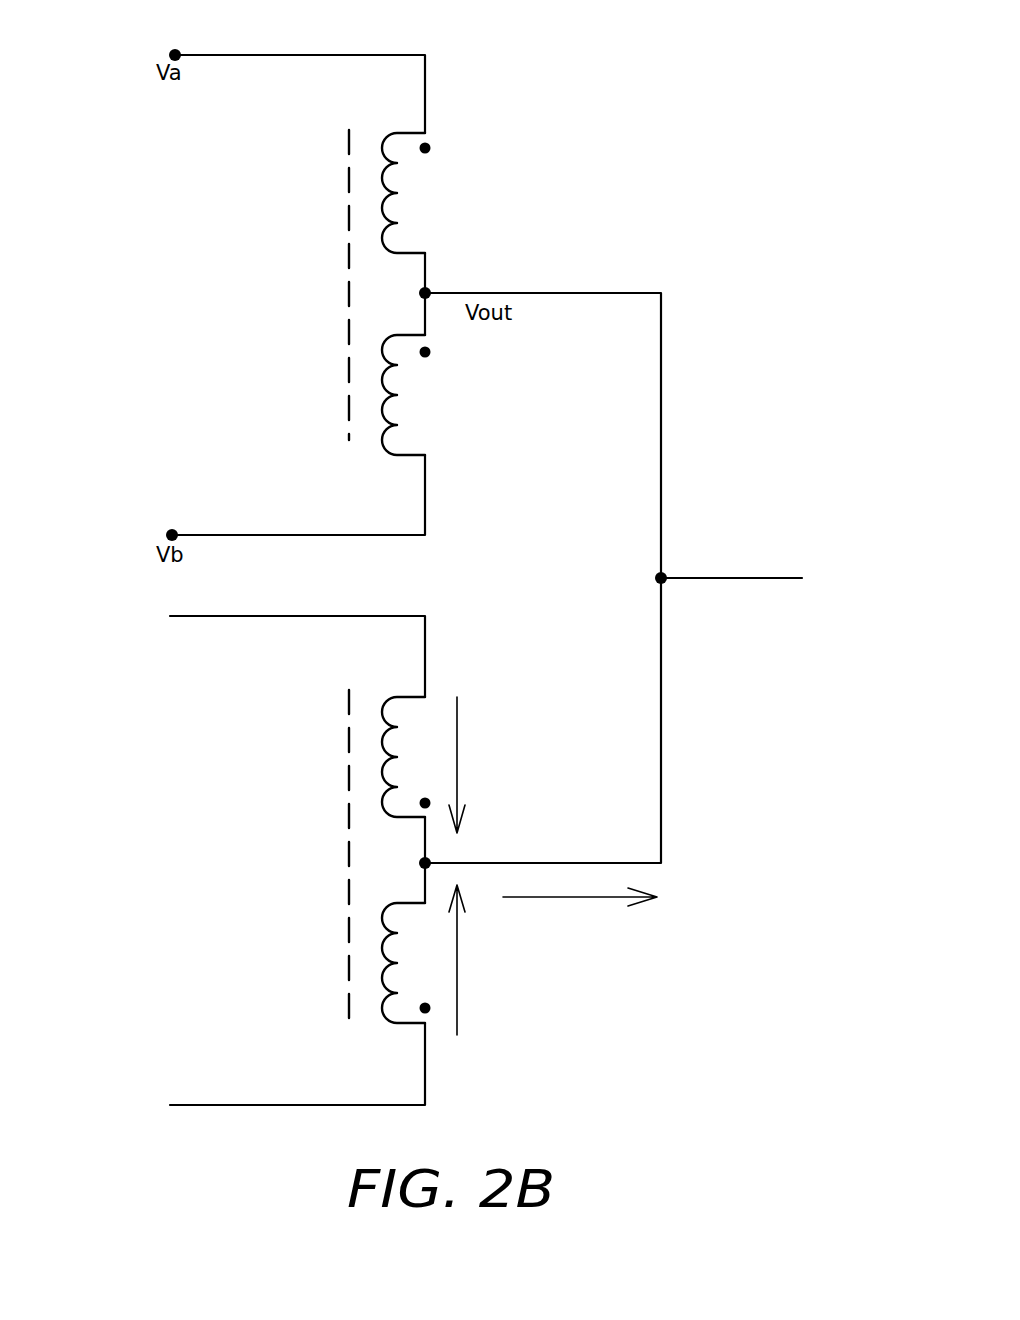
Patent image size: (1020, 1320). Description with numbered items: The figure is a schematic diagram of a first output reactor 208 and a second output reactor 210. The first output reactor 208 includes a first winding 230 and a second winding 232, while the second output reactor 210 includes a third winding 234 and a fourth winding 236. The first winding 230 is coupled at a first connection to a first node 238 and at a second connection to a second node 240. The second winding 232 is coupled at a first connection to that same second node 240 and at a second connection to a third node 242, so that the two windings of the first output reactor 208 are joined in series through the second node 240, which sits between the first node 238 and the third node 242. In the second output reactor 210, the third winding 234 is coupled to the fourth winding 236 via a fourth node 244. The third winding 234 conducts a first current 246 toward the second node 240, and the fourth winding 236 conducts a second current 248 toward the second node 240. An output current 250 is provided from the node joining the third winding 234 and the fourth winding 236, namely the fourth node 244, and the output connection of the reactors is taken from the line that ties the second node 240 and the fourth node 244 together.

The first output reactor 208 is at (404, 251).
The second output reactor 210 is at (407, 900).
The first winding 230 is at (385, 178).
The second winding 232 is at (385, 378).
The third winding 234 is at (385, 735).
The fourth winding 236 is at (385, 945).
The first node 238 is at (175, 55).
The second node 240 is at (424, 293).
The third node 242 is at (172, 535).
The fourth node 244 is at (424, 863).
The first current 246 is at (458, 752).
The second current 248 is at (458, 1022).
The output current 250 is at (580, 897).